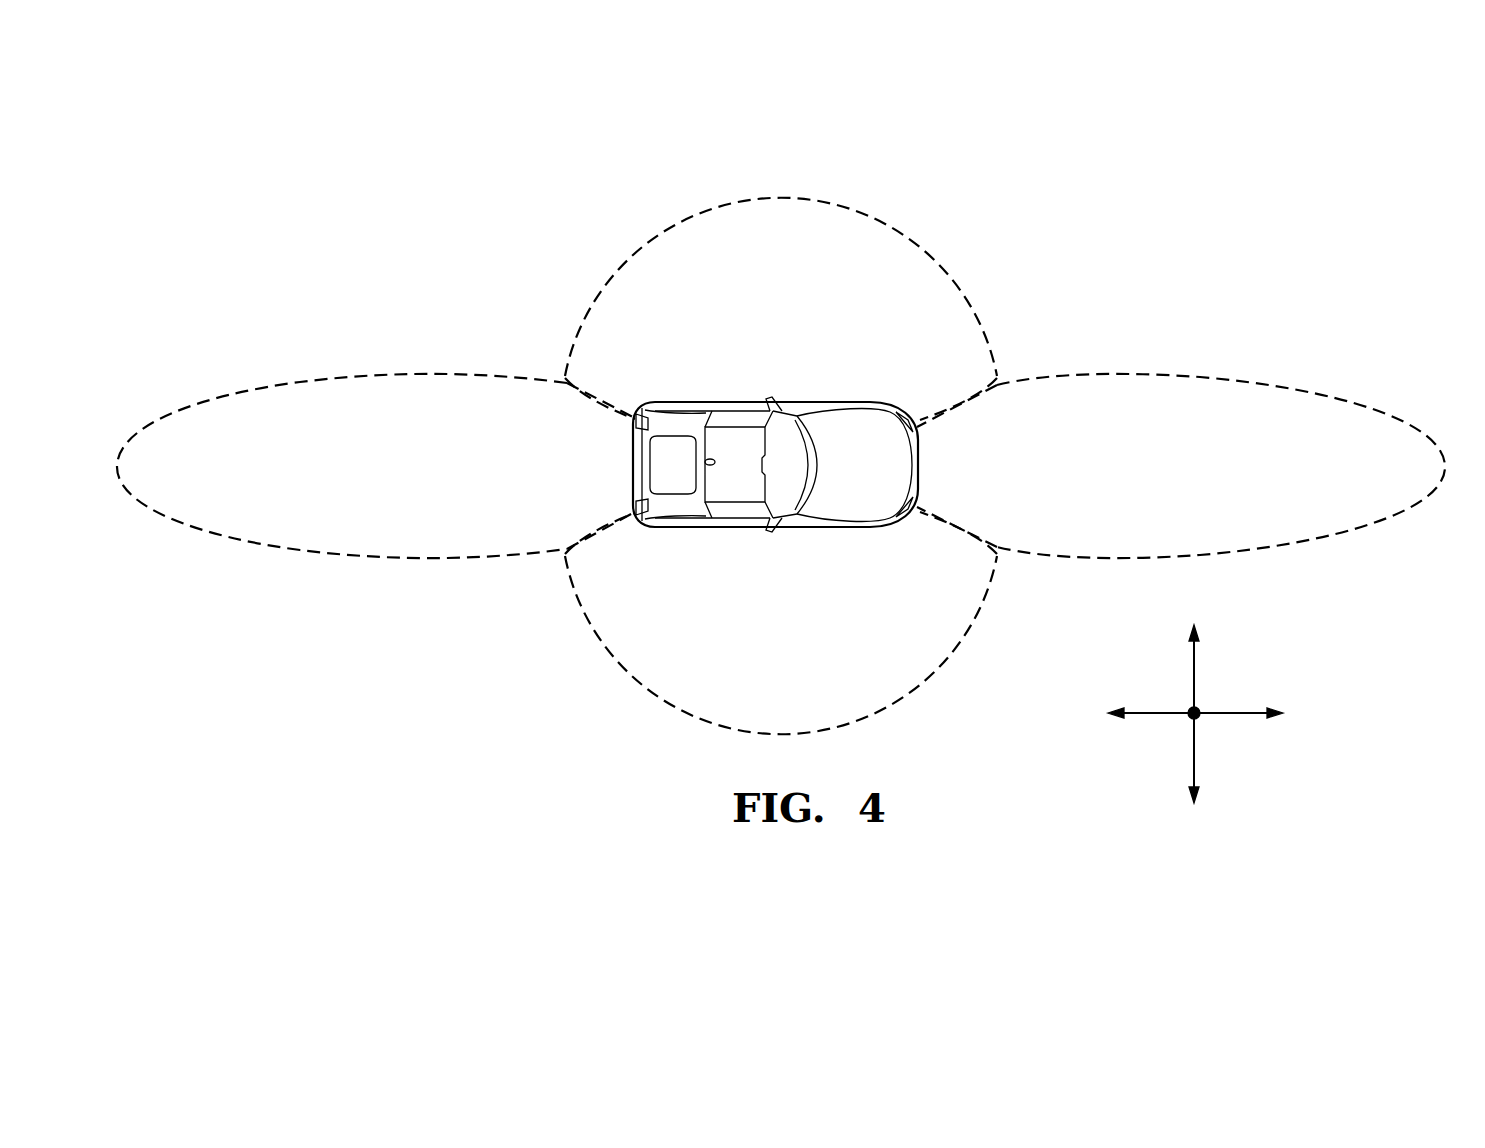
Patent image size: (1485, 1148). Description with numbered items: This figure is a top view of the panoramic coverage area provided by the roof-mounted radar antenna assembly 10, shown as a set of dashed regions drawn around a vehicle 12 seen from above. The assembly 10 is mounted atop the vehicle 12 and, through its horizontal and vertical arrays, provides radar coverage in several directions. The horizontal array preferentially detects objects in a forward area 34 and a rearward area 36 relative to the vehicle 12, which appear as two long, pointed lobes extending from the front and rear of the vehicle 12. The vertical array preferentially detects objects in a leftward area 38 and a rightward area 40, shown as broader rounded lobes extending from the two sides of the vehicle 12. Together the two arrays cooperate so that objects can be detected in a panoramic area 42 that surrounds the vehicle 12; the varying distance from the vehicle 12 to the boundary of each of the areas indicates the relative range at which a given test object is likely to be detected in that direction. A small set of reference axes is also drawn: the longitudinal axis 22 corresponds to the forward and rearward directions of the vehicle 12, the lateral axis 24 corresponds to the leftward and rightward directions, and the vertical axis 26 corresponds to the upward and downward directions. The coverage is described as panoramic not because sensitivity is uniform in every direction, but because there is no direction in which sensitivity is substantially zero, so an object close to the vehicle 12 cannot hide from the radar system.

The assembly 10 is at (710, 460).
The vehicle 12 is at (725, 482).
The longitudinal axis 22 is at (1243, 714).
The lateral axis 24 is at (1194, 668).
The vertical axis 26 is at (1192, 714).
The forward area 34 is at (1302, 388).
The rearward area 36 is at (223, 397).
The leftward area 38 is at (903, 232).
The rightward area 40 is at (918, 685).
The panoramic area 42 is at (1046, 301).